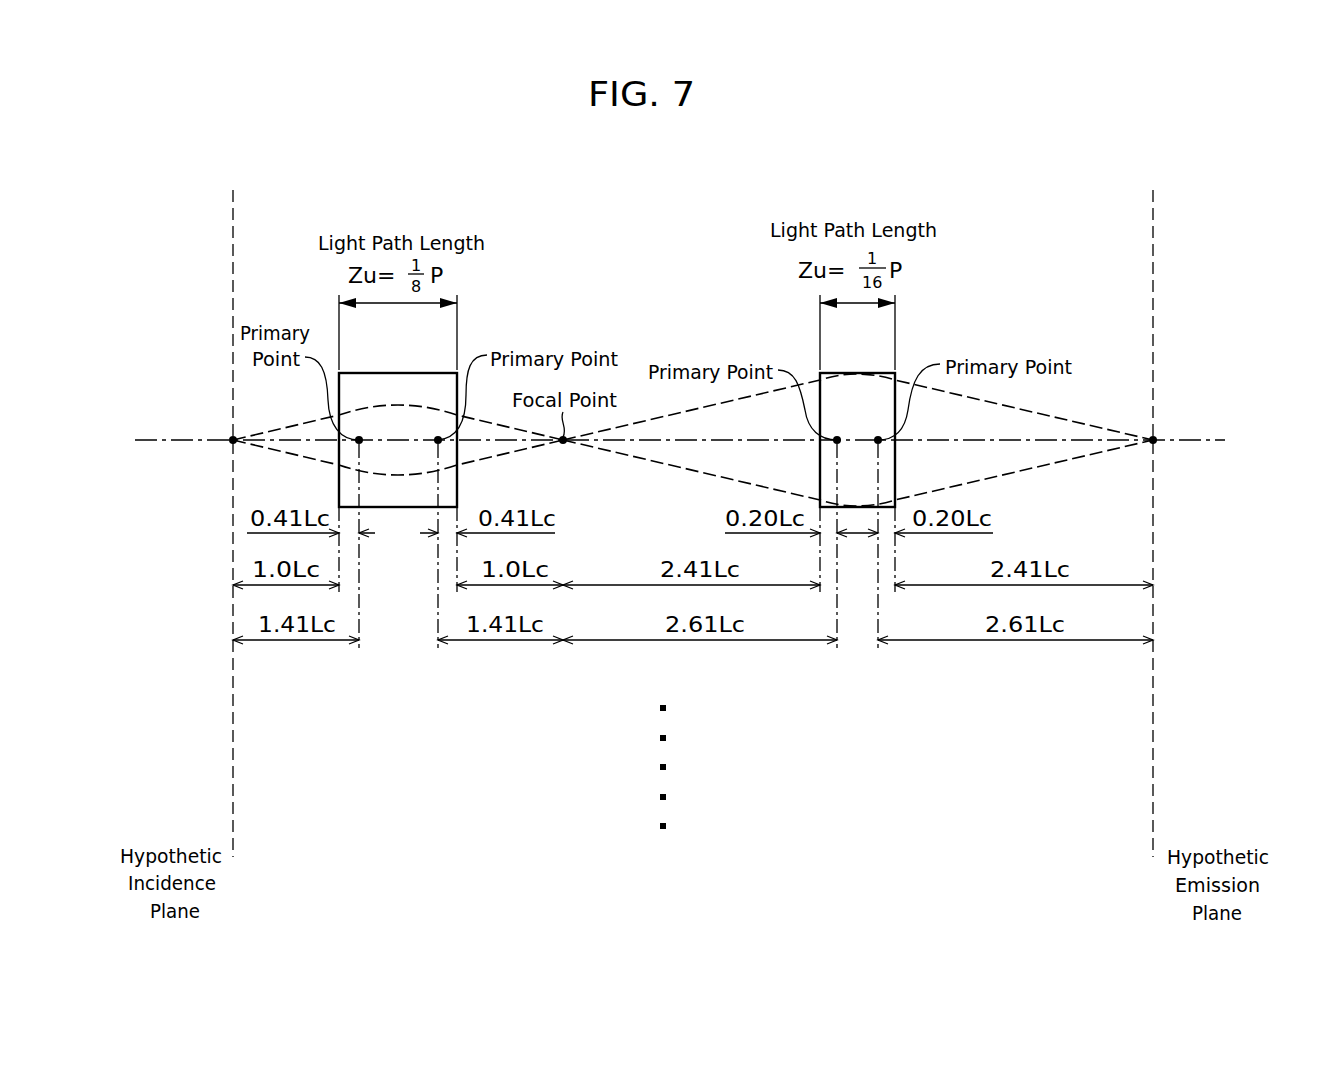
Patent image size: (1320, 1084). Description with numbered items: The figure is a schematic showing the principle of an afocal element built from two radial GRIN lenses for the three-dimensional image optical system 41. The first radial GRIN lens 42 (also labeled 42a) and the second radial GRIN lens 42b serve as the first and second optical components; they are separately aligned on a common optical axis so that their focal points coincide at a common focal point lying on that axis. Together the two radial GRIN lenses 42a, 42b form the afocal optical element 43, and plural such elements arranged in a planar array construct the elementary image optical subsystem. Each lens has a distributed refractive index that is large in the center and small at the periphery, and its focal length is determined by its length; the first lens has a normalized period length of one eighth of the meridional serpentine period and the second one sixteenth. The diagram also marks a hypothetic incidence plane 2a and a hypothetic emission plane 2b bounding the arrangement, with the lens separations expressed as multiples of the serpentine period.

The three-dimensional image optical system 41 is at (1197, 146).
The first radial GRIN lens 42 is at (655, 247).
The first radial GRIN lens 42a is at (424, 372).
The second radial GRIN lens 42b is at (862, 372).
The afocal optical element 43 is at (191, 732).
The hypothetic incidence plane 2a is at (233, 815).
The hypothetic emission plane 2b is at (1153, 813).